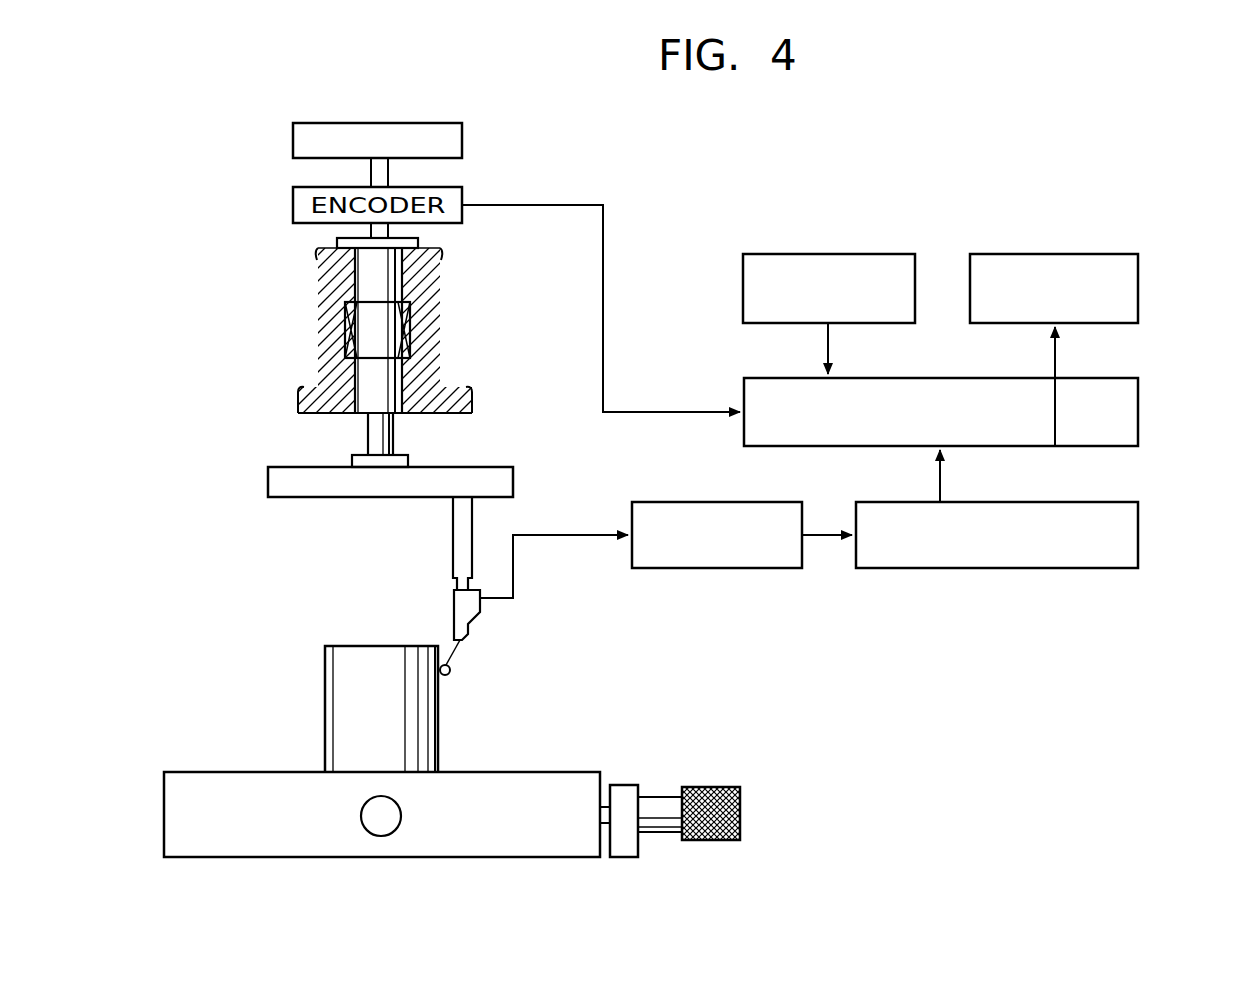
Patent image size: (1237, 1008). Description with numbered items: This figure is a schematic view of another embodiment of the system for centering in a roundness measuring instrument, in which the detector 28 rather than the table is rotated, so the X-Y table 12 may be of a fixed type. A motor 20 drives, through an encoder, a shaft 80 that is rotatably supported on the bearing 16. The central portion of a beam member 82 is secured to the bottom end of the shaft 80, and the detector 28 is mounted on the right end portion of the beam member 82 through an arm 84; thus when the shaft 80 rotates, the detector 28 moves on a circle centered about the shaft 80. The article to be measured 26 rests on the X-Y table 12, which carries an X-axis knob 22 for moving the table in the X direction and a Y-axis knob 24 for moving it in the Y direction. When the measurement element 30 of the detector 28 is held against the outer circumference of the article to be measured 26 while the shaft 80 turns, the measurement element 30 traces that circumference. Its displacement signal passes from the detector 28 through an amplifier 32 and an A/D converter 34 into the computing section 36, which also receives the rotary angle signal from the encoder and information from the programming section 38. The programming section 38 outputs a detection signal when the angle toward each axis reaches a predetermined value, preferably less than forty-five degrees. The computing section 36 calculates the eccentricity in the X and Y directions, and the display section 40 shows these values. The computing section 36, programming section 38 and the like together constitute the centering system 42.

The X-Y table 12 is at (567, 778).
The bearing 16 is at (432, 284).
The motor 20 is at (465, 150).
The X-axis knob 22 is at (710, 787).
The Y-axis knob 24 is at (388, 826).
The article to be measured 26 is at (340, 673).
The detector 28 is at (478, 612).
The measurement element 30 is at (452, 670).
The amplifier 32 is at (678, 568).
The A/D converter 34 is at (922, 568).
The computing section 36 is at (1135, 378).
The programming section 38 is at (840, 254).
The display section 40 is at (1060, 254).
The centering system 42 is at (930, 231).
The shaft 80 is at (375, 435).
The beam member 82 is at (345, 487).
The arm 84 is at (460, 556).